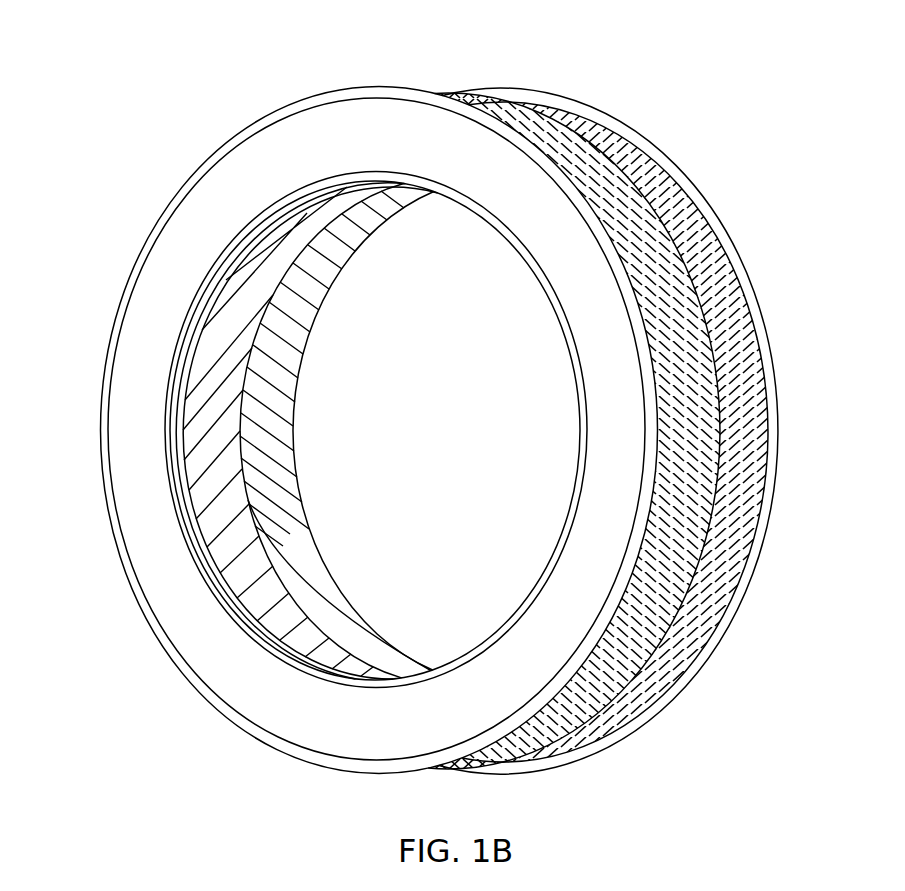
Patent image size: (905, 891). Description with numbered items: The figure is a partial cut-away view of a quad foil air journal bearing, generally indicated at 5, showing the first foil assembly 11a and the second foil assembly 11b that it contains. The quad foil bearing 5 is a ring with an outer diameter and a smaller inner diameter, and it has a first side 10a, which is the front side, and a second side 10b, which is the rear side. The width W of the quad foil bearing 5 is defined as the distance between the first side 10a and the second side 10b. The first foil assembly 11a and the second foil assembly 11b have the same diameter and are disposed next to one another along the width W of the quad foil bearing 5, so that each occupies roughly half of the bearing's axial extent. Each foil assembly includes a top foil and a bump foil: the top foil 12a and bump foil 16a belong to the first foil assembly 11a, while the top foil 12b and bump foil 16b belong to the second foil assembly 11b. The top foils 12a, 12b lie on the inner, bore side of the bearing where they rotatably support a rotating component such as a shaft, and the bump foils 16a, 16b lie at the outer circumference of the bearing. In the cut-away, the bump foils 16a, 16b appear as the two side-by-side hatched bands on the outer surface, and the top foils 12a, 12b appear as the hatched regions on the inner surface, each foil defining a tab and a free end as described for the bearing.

The quad foil bearing 5 is at (90, 106).
The first side 10a is at (116, 357).
The second side 10b is at (728, 245).
The first foil assembly 11a is at (700, 493).
The second foil assembly 11b is at (283, 398).
The top foil 12a is at (221, 539).
The top foil 12b is at (285, 359).
The bump foil 16a is at (690, 447).
The bump foil 16b is at (743, 330).
The width W is at (544, 88).